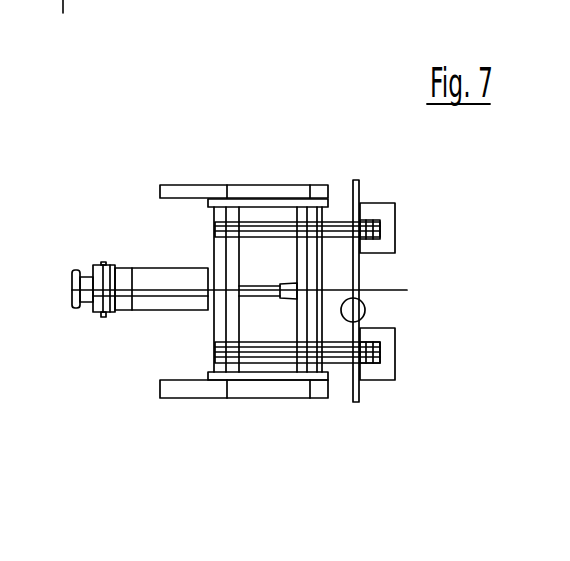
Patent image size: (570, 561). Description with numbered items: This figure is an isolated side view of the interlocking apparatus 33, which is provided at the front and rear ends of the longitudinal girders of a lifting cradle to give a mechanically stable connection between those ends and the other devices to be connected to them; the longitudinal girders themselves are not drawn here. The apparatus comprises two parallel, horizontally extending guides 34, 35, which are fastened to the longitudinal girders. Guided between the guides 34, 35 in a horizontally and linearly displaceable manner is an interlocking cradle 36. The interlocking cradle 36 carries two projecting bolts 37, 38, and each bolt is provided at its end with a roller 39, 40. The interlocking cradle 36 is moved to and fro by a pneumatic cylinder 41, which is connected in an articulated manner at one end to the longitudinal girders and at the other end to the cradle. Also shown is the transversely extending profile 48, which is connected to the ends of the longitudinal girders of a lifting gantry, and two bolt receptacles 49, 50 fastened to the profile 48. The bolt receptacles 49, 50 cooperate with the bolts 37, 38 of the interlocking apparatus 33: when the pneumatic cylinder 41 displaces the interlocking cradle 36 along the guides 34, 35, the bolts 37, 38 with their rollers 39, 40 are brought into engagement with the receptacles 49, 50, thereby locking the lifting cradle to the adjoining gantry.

The interlocking apparatus 33 is at (168, 160).
The guide 34 is at (258, 399).
The guide 35 is at (263, 184).
The interlocking cradle 36 is at (218, 280).
The bolt 37 is at (347, 221).
The bolt 38 is at (339, 364).
The roller 39 is at (366, 206).
The roller 40 is at (370, 381).
The pneumatic cylinder 41 is at (167, 295).
The transversely extending profile 48 is at (362, 318).
The bolt receptacle 49 is at (386, 243).
The bolt receptacle 50 is at (383, 368).